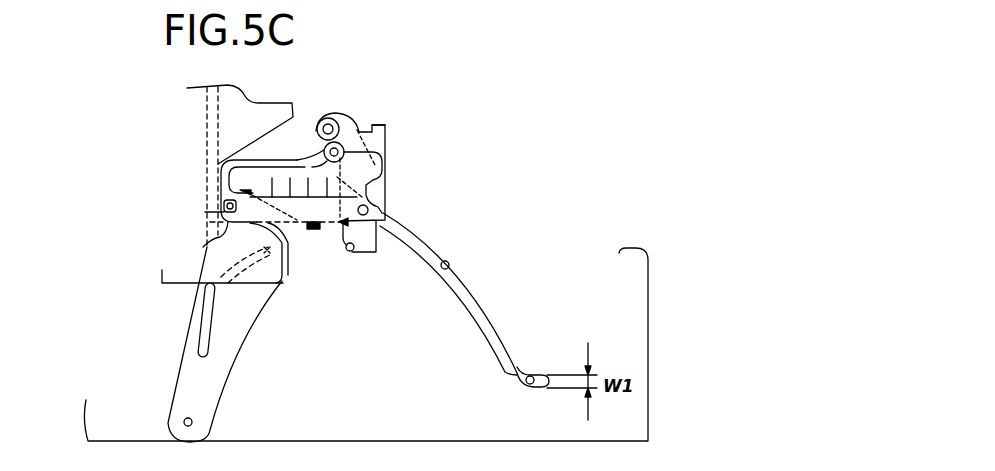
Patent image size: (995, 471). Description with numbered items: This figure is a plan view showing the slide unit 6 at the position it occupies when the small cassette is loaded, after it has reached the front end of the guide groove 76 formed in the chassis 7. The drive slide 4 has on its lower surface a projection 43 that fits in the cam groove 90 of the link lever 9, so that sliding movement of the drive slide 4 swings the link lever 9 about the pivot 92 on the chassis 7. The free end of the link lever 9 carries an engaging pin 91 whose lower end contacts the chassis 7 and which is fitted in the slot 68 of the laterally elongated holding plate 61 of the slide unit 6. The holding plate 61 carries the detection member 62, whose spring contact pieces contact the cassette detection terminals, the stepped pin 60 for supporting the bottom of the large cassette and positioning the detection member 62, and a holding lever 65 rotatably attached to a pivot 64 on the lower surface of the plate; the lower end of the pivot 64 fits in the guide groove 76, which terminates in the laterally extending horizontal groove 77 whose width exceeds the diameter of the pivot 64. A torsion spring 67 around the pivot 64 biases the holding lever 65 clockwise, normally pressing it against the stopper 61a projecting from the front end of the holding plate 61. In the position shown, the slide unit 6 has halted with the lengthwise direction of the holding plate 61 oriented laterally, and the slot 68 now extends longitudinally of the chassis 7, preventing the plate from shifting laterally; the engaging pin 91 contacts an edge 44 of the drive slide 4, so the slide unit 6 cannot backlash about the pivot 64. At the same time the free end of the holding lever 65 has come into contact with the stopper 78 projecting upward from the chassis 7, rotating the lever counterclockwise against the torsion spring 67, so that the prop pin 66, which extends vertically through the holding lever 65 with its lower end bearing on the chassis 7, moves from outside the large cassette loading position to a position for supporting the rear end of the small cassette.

The drive slide 4 is at (274, 104).
The slide unit 6 is at (400, 183).
The chassis 7 is at (632, 343).
The link lever 9 is at (230, 362).
The projection 43 is at (278, 266).
The edge 44 is at (203, 246).
The stepped pin 60 is at (340, 150).
The holding plate 61 is at (290, 224).
The stopper 61a is at (387, 122).
The detection member 62 is at (257, 170).
The pivot 64 is at (388, 203).
The holding lever 65 is at (346, 123).
The prop pin 66 is at (328, 118).
The torsion spring 67 is at (392, 167).
The slot 68 is at (218, 192).
The guide groove 76 is at (450, 267).
The horizontal groove 77 is at (533, 373).
The stopper 78 is at (352, 252).
The cam groove 90 is at (207, 327).
The engaging pin 91 is at (207, 208).
The pivot 92 is at (192, 422).